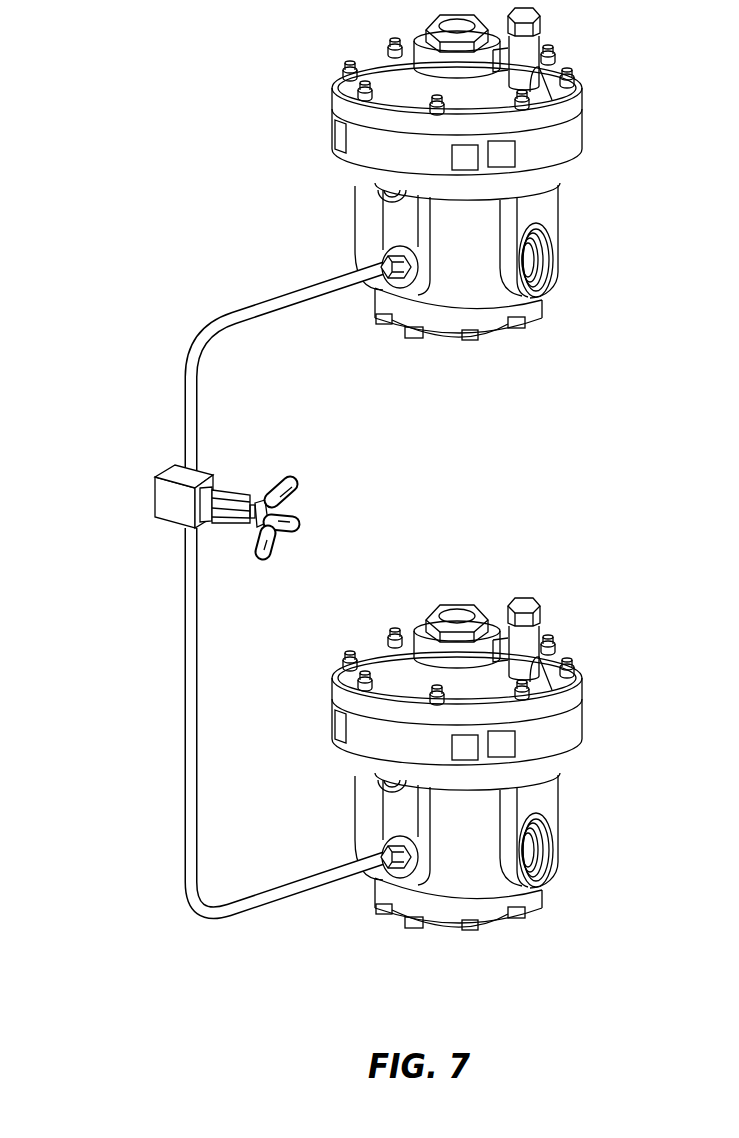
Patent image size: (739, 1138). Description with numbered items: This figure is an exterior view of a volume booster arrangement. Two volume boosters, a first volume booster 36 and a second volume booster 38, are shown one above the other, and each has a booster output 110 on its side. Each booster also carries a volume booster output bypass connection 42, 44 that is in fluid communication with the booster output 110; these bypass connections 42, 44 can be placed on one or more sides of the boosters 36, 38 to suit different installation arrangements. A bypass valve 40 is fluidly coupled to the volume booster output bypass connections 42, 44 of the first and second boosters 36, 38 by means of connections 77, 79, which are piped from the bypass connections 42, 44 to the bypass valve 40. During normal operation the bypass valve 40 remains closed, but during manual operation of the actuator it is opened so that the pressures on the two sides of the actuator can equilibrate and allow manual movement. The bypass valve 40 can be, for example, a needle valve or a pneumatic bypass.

The first volume booster 36 is at (333, 128).
The second volume booster 38 is at (333, 718).
The bypass valve 40 is at (155, 498).
The volume booster output bypass connection 42 is at (392, 250).
The volume booster output bypass connection 44 is at (392, 845).
The connection 77 is at (237, 313).
The connection 79 is at (272, 905).
The booster output 110 is at (541, 260).